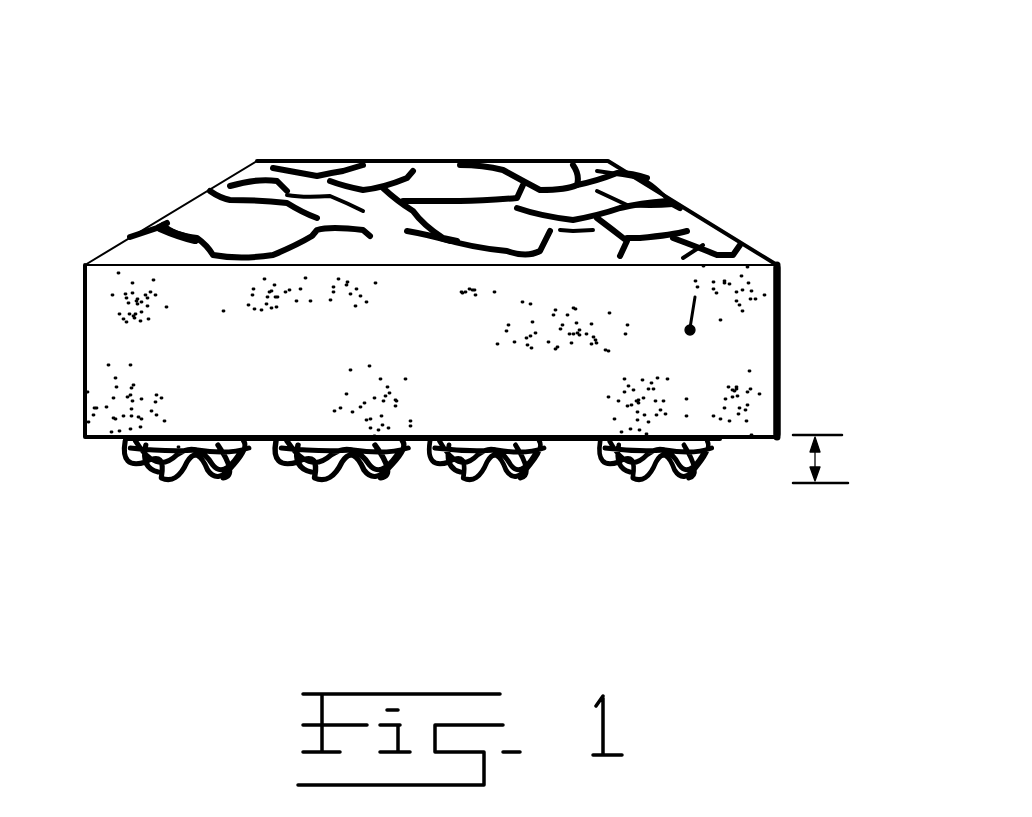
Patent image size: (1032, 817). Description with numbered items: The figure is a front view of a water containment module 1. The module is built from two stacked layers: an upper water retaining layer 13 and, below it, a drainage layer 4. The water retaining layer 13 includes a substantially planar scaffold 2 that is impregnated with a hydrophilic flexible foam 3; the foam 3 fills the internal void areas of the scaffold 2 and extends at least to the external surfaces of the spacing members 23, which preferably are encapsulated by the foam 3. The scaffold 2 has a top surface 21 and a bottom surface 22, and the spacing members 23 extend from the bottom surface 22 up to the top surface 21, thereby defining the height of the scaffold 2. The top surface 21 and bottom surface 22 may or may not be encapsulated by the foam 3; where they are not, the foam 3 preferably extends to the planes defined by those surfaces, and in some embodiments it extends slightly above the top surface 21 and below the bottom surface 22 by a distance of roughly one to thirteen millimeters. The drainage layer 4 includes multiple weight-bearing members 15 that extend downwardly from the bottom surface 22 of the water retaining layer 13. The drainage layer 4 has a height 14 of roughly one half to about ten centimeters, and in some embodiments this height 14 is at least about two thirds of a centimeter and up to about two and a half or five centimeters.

The water containment module 1 is at (178, 158).
The scaffold 2 is at (703, 253).
The top surface 21 is at (362, 210).
The hydrophilic flexible foam 3 is at (437, 368).
The water retaining layer 13 is at (795, 287).
The spacing members 23 is at (695, 325).
The drainage layer 4 is at (130, 461).
The weight-bearing members 15 is at (183, 478).
The bottom surface 22 is at (270, 452).
The height 14 is at (820, 461).